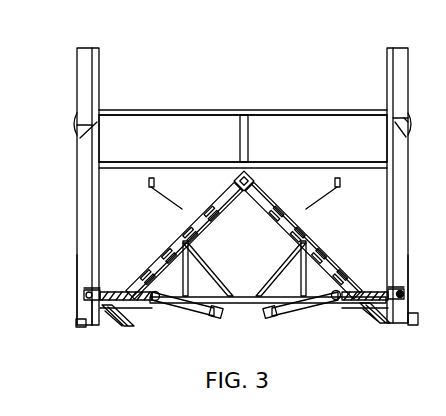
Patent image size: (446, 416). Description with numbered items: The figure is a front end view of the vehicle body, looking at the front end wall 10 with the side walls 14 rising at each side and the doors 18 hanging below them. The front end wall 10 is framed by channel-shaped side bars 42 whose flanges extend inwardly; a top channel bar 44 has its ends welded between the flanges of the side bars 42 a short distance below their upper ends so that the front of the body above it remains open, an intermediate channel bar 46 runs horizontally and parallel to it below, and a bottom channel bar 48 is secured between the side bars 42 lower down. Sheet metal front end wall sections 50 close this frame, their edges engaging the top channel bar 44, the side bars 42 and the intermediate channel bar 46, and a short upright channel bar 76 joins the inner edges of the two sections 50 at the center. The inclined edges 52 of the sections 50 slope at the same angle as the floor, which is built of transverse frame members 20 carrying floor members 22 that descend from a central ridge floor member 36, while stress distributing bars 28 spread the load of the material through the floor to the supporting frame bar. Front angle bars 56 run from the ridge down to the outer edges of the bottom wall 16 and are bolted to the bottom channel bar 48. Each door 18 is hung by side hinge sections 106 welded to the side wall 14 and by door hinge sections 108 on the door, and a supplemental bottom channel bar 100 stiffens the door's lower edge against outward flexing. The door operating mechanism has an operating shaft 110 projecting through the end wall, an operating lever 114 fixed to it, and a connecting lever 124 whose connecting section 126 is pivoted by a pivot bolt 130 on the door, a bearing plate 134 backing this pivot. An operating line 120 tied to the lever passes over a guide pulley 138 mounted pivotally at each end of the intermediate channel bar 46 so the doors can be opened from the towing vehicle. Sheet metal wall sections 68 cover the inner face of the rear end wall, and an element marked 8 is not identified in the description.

The hitch assembly 8 is at (440, 93).
The front end wall 10 is at (113, 188).
The side walls 14 is at (86, 55).
The bottom wall 16 is at (149, 246).
The doors 18 is at (75, 273).
The transverse frame members 20 is at (231, 316).
The floor members 22 is at (337, 252).
The stress distributing bars 28 is at (268, 275).
The central ridge floor member 36 is at (239, 176).
The side bars 42 is at (100, 95).
The top channel bar 44 is at (278, 110).
The intermediate channel bar 46 is at (366, 170).
The bottom channel bar 48 is at (322, 306).
The front end wall sections 50 is at (165, 127).
The inclined edges 52 is at (216, 209).
The front angle bars 56 is at (223, 216).
The sheet metal wall sections 68 is at (412, 122).
The short upright channel bar 76 is at (239, 126).
The supplemental bottom channel bar 100 is at (78, 326).
The side hinge sections 106 is at (78, 120).
The door hinge section 108 is at (77, 147).
The operating shaft 110 is at (150, 304).
The operating lever 114 is at (198, 306).
The operating line 120 is at (162, 202).
The connecting lever 124 is at (352, 302).
The connecting section 126 is at (97, 328).
The pivot bolt 130 is at (84, 298).
The bearing plate 134 is at (86, 292).
The guide pulley 138 is at (150, 178).